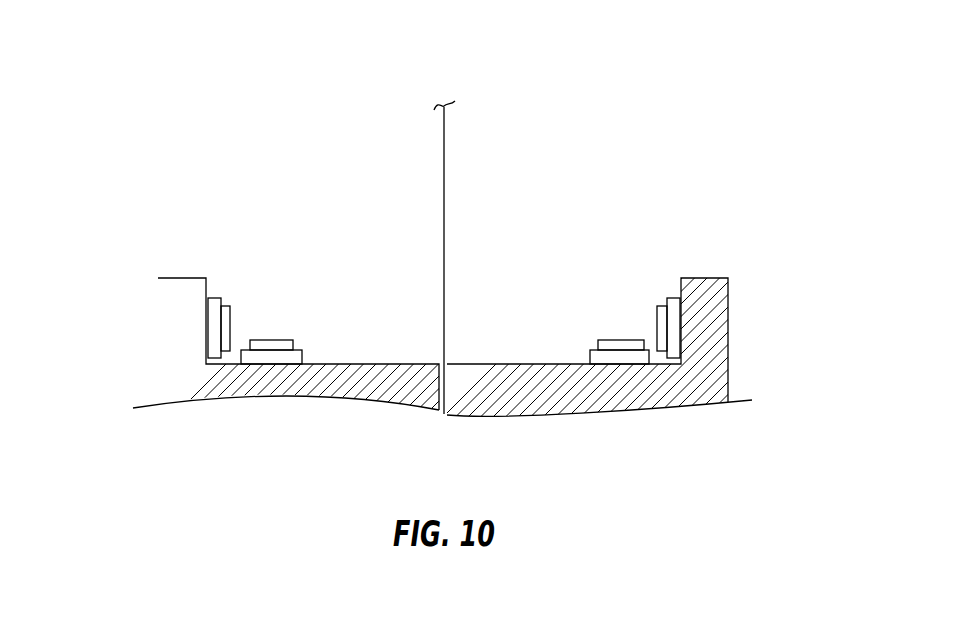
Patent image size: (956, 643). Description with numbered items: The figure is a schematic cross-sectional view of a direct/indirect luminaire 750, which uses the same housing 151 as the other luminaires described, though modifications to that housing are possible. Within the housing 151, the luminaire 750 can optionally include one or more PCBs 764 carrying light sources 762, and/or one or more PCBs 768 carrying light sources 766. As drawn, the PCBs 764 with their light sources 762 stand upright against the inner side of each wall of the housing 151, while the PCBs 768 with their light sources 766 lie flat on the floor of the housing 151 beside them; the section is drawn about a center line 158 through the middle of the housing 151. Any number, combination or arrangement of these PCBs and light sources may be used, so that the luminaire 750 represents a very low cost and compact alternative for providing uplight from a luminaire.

The direct/indirect luminaire 750 is at (693, 118).
The housing 151 is at (172, 375).
The center line / shaft 158 is at (444, 148).
The light sources 762 is at (225, 322).
The PCB 764 is at (213, 312).
The light sources 766 is at (287, 345).
The PCB 768 is at (292, 357).